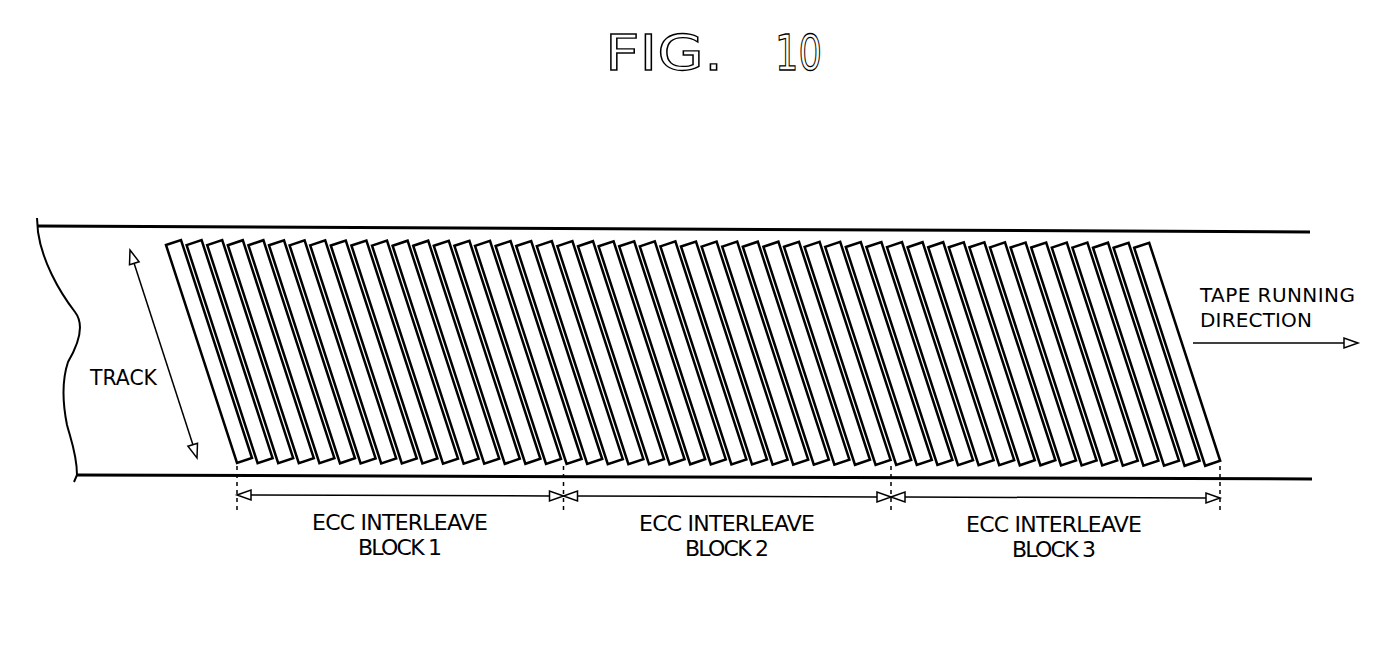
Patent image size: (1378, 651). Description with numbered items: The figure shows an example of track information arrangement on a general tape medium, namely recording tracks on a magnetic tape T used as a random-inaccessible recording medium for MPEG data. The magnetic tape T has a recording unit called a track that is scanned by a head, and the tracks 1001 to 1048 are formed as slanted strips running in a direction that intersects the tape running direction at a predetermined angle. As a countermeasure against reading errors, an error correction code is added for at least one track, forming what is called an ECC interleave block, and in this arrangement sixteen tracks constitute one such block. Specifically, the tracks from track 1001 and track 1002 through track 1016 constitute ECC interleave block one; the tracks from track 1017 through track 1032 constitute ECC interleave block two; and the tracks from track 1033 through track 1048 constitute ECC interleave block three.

The track 1001 is at (173, 242).
The track 1002 is at (194, 241).
The track 1016 is at (483, 243).
The track 1017 is at (505, 242).
The track 1032 is at (812, 243).
The track 1033 is at (833, 243).
The track 1048 is at (1140, 245).
The magnetic tape T is at (1272, 480).